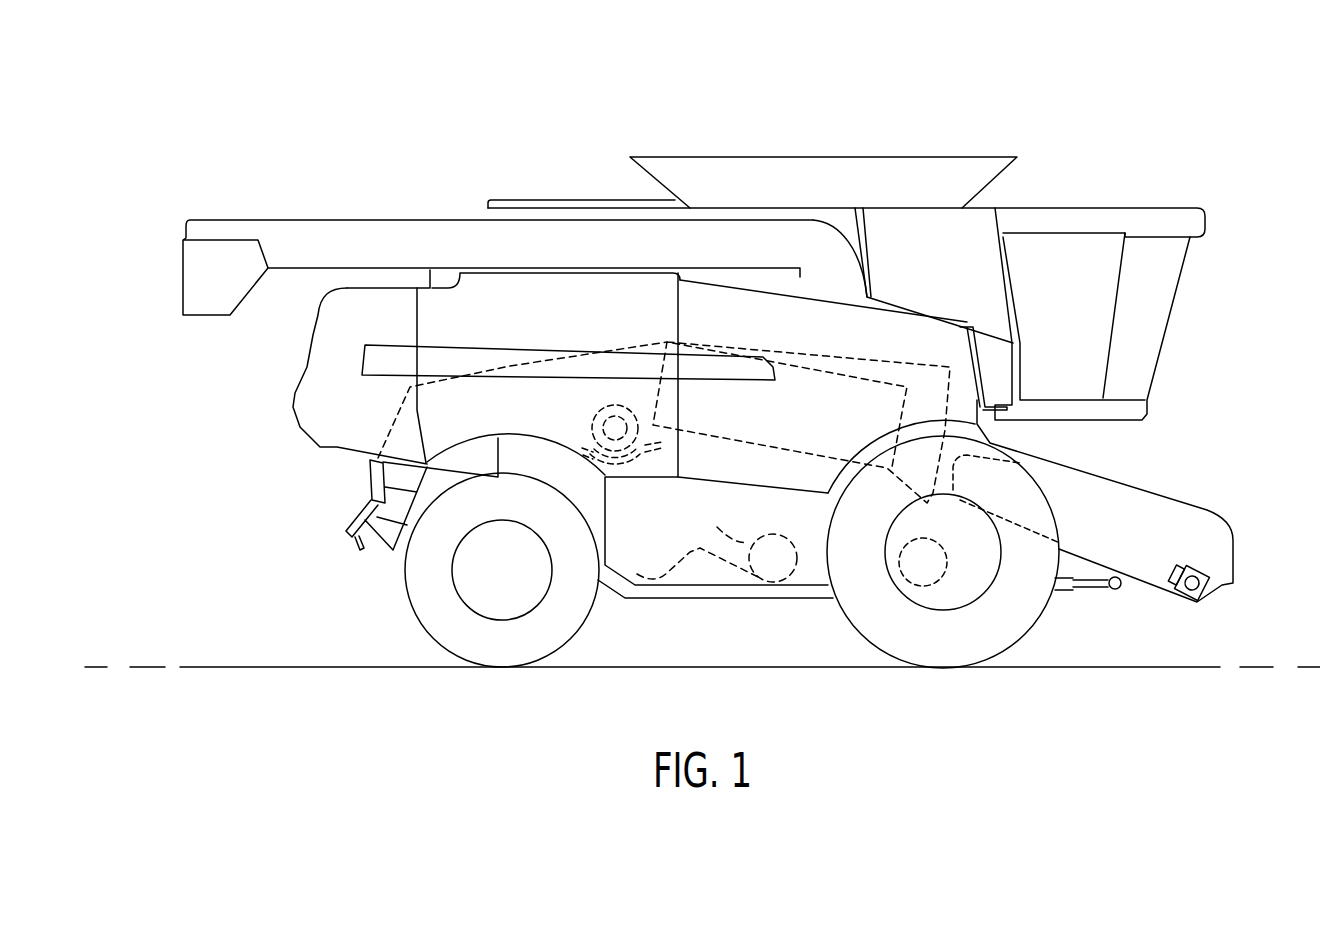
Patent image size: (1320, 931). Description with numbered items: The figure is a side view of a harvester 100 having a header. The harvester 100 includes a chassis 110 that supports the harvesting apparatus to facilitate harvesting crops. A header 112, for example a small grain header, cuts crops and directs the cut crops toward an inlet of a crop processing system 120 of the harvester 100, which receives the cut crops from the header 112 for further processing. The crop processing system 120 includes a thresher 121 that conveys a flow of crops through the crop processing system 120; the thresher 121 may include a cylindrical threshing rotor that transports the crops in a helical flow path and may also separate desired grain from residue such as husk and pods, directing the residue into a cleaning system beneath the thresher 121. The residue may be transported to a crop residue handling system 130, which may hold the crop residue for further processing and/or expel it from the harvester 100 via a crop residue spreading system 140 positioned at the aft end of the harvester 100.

The harvester 100 is at (1208, 112).
The chassis 110 is at (656, 606).
The header 112 is at (1205, 612).
The crop processing system 120 is at (814, 340).
The thresher 121 is at (821, 367).
The crop residue handling system 130 is at (550, 346).
The crop residue spreading system 140 is at (354, 515).